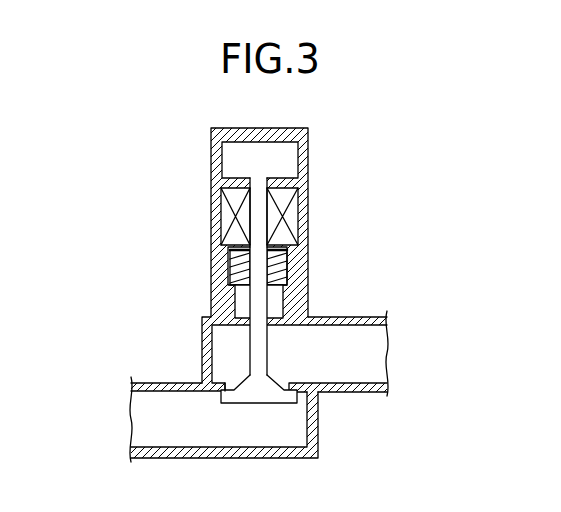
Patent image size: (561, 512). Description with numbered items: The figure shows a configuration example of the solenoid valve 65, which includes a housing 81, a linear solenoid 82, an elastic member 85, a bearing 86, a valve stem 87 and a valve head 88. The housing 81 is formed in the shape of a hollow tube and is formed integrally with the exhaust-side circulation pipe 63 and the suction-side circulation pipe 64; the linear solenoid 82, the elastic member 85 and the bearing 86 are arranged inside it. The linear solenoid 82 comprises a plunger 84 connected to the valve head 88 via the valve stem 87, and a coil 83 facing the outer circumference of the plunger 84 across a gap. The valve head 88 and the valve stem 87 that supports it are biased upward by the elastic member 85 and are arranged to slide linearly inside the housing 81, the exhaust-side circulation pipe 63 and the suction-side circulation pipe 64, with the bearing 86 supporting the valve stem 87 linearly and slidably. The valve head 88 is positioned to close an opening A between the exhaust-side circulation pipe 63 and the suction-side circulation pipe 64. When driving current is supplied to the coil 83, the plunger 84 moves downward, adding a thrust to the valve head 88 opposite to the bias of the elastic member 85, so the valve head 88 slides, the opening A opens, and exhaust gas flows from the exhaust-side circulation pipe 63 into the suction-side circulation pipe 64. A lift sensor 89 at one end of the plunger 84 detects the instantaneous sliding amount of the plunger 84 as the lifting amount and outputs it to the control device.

The exhaust-side circulation pipe 63 is at (172, 432).
The suction-side circulation pipe 64 is at (357, 352).
The solenoid valve 65 is at (269, 285).
The housing 81 is at (309, 148).
The linear solenoid 82 is at (202, 215).
The coil 83 is at (233, 202).
The plunger 84 is at (263, 232).
The elastic member 85 is at (233, 267).
The bearing 86 is at (242, 303).
The valve stem 87 is at (268, 375).
The valve head 88 is at (258, 392).
The lift sensor 89 is at (254, 165).
The opening A is at (230, 385).